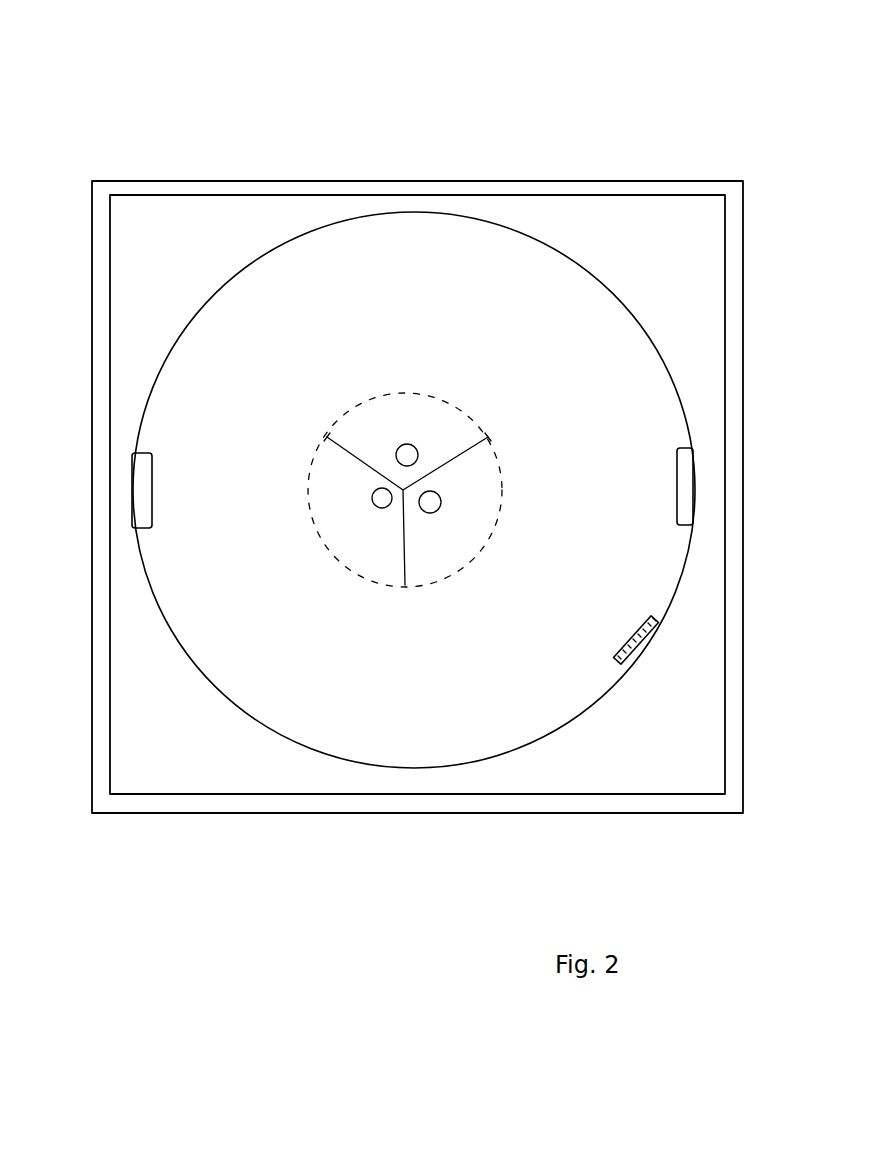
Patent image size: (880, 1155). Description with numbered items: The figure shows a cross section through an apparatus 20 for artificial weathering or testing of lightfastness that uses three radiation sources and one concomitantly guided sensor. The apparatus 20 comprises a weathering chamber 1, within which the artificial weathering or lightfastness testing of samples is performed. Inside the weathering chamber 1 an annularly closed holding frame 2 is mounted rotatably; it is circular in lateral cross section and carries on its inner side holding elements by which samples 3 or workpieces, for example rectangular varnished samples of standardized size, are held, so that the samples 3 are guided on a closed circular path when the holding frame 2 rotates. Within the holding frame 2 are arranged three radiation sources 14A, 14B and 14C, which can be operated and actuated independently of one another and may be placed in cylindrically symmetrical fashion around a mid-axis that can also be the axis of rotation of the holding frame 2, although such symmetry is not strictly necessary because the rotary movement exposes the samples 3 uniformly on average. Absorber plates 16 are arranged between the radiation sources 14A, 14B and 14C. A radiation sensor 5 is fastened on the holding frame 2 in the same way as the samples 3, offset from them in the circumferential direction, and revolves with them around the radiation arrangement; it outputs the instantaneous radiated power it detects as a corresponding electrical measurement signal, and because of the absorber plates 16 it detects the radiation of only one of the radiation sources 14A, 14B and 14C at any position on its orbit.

The apparatus 20 is at (570, 70).
The weathering chamber 1 is at (92, 628).
The holding frame 2 is at (625, 307).
The samples 3 is at (150, 460).
The radiation sensor 5 is at (630, 627).
The absorber plates 16 is at (360, 458).
The radiation source 14A is at (410, 444).
The radiation source 14B is at (372, 502).
The radiation source 14C is at (441, 502).